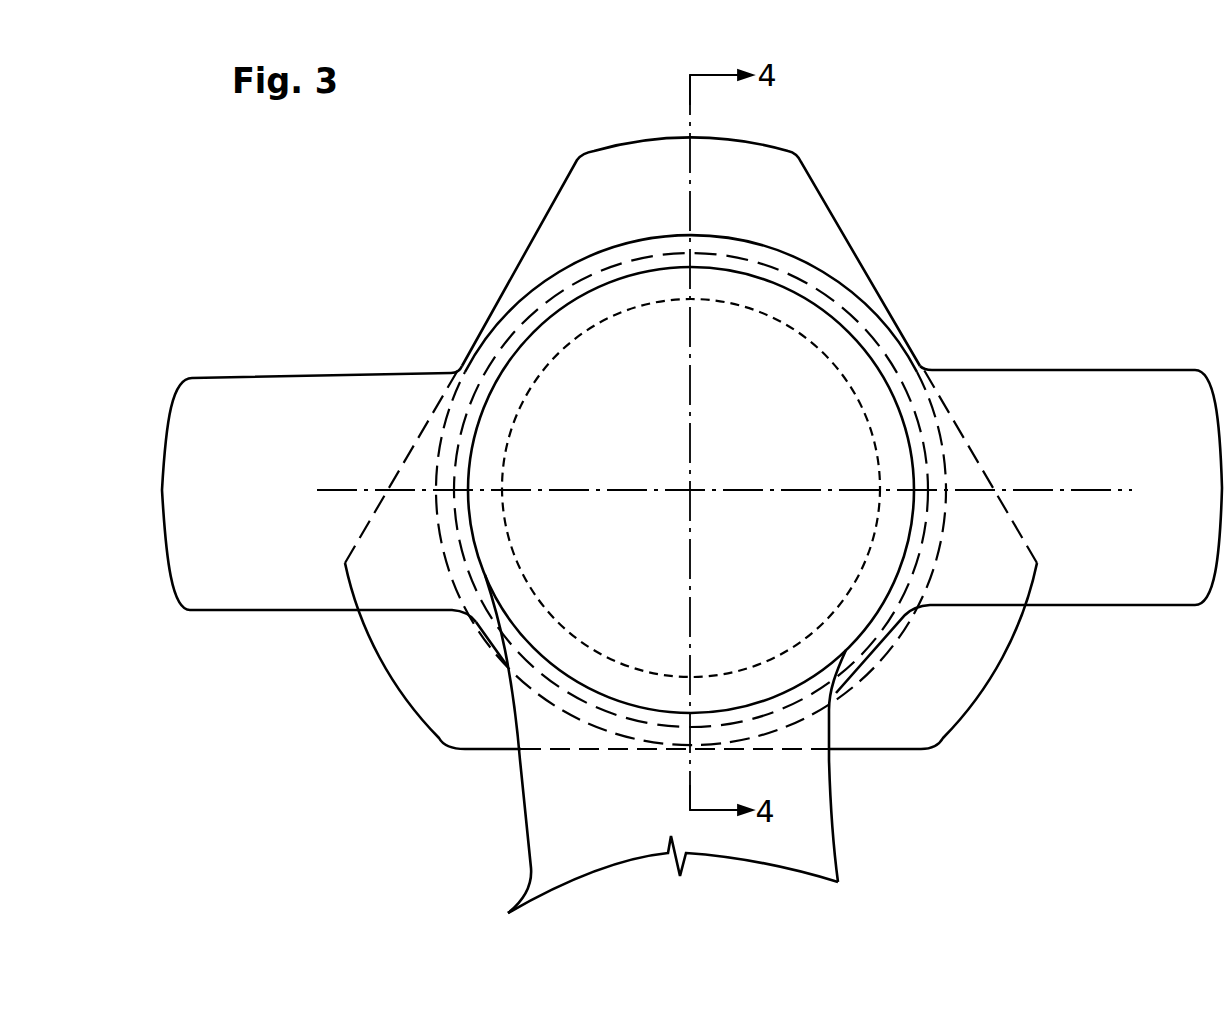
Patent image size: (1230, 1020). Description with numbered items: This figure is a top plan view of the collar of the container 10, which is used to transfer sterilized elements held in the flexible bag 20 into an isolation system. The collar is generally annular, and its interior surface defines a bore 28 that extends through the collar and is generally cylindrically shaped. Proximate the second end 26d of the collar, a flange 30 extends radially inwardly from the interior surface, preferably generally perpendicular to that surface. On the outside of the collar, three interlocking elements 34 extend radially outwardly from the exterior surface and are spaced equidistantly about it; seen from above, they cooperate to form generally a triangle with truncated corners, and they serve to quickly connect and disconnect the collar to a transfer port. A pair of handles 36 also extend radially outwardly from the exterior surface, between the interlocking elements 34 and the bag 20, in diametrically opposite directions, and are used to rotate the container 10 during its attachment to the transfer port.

The container 10 is at (910, 271).
The flexible bag 20 is at (827, 846).
The second end 26d is at (810, 273).
The bore 28 is at (792, 617).
The flange 30 is at (742, 670).
The interlocking elements 34 is at (787, 163).
The handles 36 is at (221, 484).